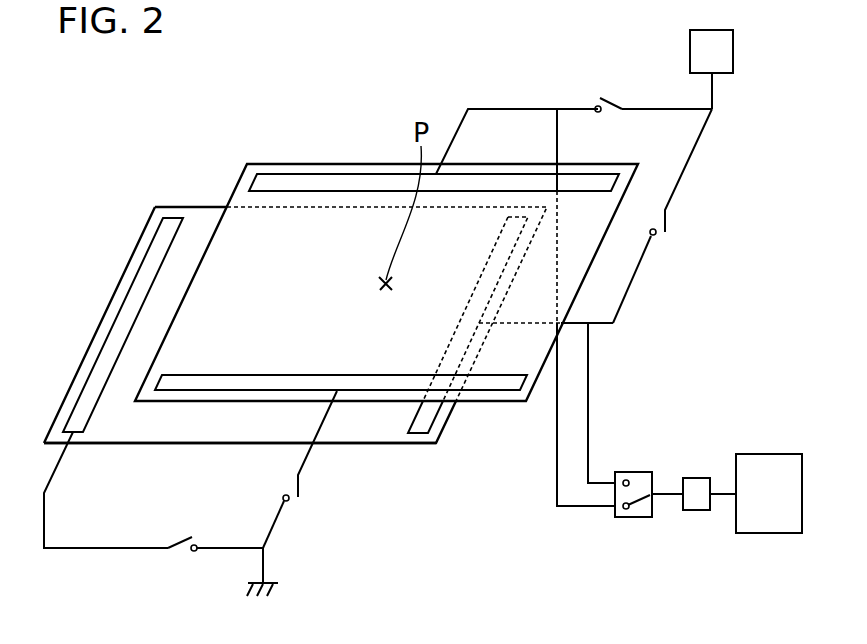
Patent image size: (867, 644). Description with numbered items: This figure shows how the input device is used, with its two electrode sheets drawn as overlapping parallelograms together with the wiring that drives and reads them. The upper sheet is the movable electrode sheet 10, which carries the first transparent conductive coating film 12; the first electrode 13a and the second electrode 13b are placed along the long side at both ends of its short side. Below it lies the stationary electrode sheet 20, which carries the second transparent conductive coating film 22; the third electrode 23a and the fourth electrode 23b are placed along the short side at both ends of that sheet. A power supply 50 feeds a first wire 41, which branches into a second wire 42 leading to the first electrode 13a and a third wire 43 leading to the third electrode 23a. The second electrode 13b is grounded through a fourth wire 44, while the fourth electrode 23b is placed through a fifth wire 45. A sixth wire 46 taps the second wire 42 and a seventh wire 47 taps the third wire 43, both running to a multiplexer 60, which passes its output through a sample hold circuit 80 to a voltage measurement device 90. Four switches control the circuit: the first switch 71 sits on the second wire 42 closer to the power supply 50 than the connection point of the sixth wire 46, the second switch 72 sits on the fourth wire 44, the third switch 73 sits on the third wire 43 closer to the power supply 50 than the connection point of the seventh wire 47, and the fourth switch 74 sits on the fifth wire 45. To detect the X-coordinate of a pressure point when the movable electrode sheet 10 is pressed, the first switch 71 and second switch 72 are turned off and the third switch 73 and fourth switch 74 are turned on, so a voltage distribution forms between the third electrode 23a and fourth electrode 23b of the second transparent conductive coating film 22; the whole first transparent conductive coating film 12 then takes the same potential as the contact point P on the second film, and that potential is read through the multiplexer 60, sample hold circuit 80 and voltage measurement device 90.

The movable electrode sheet 10 is at (322, 163).
The first transparent conductive coating film 12 is at (525, 337).
The first electrode 13a is at (355, 174).
The second electrode 13b is at (490, 392).
The stationary electrode sheet 20 is at (198, 207).
The second transparent conductive coating film 22 is at (365, 427).
The third electrode 23a is at (478, 353).
The fourth electrode 23b is at (118, 311).
The first wire 41 is at (713, 90).
The second wire 42 is at (503, 108).
The third wire 43 is at (690, 155).
The fourth wire 44 is at (278, 531).
The fifth wire 45 is at (103, 550).
The sixth wire 46 is at (558, 128).
The seventh wire 47 is at (589, 440).
The power supply 50 is at (735, 50).
The multiplexer 60 is at (628, 518).
The first switch 71 is at (603, 98).
The second switch 72 is at (300, 487).
The third switch 73 is at (666, 222).
The fourth switch 74 is at (186, 540).
The sample hold circuit 80 is at (695, 512).
The voltage measurement device 90 is at (770, 535).